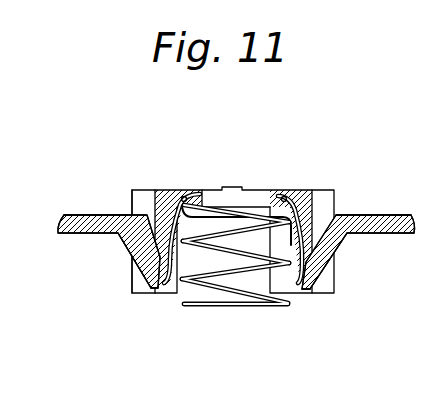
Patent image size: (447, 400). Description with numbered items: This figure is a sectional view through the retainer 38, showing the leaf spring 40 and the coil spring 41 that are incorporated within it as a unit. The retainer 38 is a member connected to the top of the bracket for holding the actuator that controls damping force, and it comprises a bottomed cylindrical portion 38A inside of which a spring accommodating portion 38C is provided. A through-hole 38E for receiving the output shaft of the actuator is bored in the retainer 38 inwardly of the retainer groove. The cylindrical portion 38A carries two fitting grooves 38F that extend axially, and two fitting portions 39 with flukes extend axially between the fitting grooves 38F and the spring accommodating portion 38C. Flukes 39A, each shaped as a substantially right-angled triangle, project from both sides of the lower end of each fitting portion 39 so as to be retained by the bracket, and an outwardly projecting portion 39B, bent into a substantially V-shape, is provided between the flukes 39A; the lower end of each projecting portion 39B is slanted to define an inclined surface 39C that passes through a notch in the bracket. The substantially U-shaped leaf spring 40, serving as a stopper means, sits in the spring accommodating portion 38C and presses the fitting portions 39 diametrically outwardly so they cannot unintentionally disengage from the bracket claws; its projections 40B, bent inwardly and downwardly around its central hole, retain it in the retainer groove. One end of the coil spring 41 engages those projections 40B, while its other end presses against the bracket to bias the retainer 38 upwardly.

The retainer 38 is at (321, 190).
The cylindrical portion 38A is at (133, 207).
The spring accommodating portion 38C is at (200, 227).
The through-hole 38E is at (254, 197).
The fitting grooves 38F is at (147, 198).
The fitting portions 39 is at (118, 236).
The flukes 39A is at (131, 256).
The outwardly projecting portion 39B is at (70, 214).
The inclined surface 39C is at (143, 292).
The leaf spring 40 is at (170, 190).
The projections 40B is at (284, 197).
The coil spring 41 is at (235, 313).